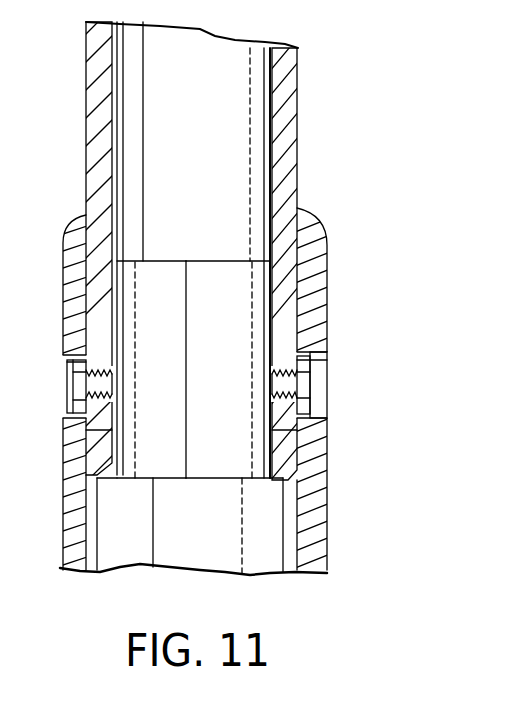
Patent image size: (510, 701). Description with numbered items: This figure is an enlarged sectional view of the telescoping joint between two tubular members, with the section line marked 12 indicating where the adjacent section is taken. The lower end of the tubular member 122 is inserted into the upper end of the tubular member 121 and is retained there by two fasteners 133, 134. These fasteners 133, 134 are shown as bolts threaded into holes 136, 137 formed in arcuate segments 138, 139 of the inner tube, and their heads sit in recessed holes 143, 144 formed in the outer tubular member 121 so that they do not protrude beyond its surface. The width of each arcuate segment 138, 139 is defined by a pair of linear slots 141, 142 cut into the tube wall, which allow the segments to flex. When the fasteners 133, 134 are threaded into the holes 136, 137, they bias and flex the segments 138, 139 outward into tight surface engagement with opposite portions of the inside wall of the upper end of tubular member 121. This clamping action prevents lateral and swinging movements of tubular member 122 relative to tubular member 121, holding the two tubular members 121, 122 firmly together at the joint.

The section line 12- 12 is at (60, 518).
The tubular member 121 is at (307, 533).
The tubular member 122 is at (285, 117).
The fastener 133 is at (66, 400).
The fastener 134 is at (318, 390).
The hole 136 is at (110, 372).
The hole 137 is at (277, 372).
The arcuate segment 138 is at (86, 445).
The arcuate segment 139 is at (285, 440).
The linear slots 141 is at (111, 478).
The linear slots 142 is at (268, 480).
The recessed hole 143 is at (70, 356).
The recessed hole 144 is at (322, 352).